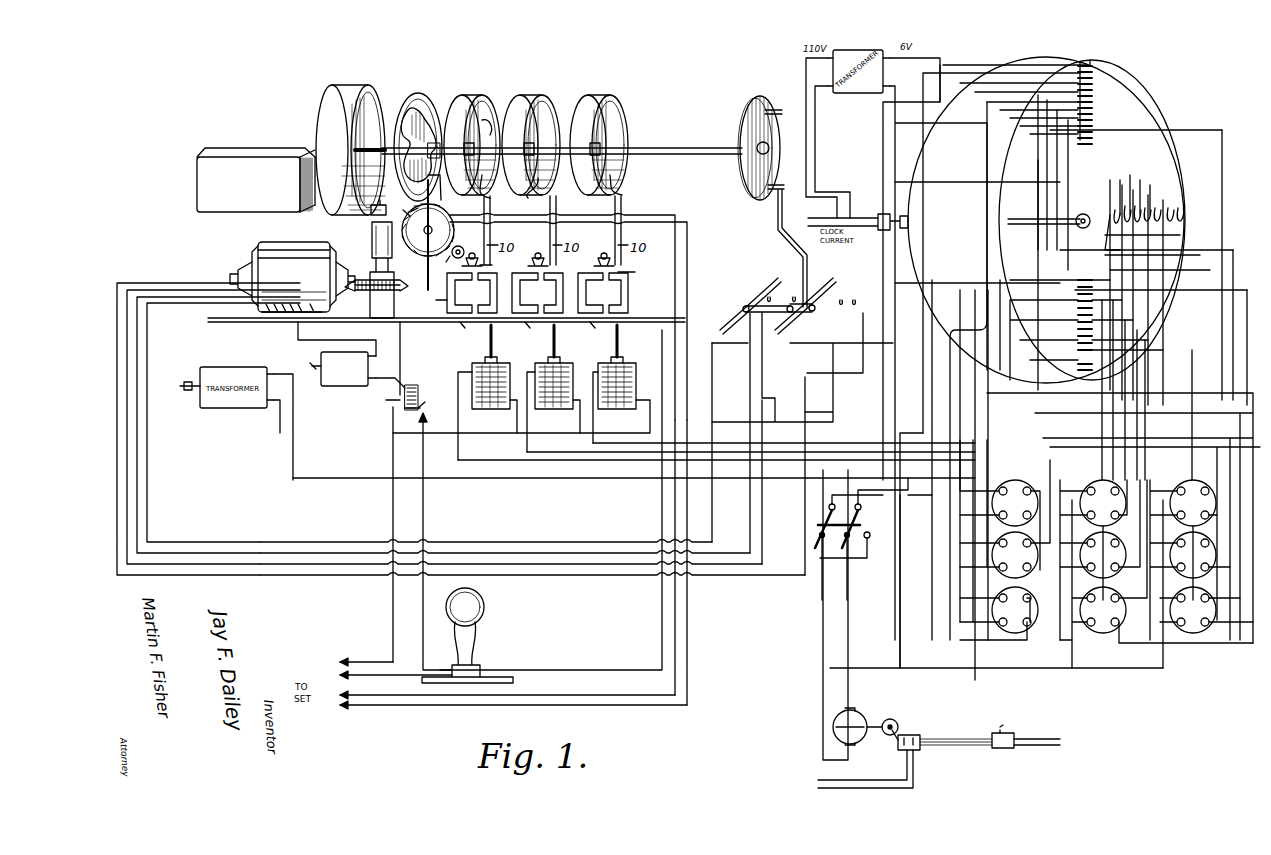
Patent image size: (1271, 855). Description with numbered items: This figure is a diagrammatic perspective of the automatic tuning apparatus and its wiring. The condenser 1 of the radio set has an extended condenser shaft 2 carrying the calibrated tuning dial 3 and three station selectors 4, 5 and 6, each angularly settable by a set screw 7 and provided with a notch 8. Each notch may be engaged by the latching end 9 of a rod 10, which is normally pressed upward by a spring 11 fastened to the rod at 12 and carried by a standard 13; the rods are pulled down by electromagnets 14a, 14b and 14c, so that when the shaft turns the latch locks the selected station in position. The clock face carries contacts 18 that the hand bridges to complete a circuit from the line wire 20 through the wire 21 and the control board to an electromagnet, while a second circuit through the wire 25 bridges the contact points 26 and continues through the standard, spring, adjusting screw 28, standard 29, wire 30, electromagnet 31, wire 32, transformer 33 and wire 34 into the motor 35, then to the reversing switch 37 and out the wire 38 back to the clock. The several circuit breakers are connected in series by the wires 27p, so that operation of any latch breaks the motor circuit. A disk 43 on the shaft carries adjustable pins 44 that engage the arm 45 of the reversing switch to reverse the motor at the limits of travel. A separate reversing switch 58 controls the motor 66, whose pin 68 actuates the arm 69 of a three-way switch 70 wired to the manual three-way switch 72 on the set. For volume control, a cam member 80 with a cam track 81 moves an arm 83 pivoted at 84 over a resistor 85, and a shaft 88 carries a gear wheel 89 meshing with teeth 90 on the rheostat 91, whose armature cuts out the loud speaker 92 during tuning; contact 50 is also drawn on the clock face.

The condenser 1 is at (196, 182).
The condenser shaft 2 is at (378, 125).
The calibrated tuning dial 3 is at (320, 100).
The station selector 4 is at (462, 104).
The station selector 5 is at (535, 102).
The station selector 6 is at (600, 102).
The set screw 7 is at (631, 128).
The notch 8 is at (562, 146).
The latching end 9 is at (568, 305).
The rod 10 is at (1122, 72).
The spring 11 is at (622, 280).
The fastening point 12 is at (1026, 224).
The standard 13 is at (537, 283).
The electromagnet 14a is at (487, 392).
The electromagnet 14b is at (553, 388).
The electromagnet 14c is at (621, 384).
The contacts 18 is at (1093, 92).
The line wire 20 is at (1130, 95).
The wire 21 is at (1001, 253).
The wire 25 is at (1036, 148).
The contact points 26 is at (1022, 490).
The wires 27p is at (532, 336).
The adjusting screw 28 is at (473, 262).
The standard 29 is at (432, 295).
The wire 30 is at (436, 337).
The electromagnet 31 is at (384, 396).
The wire 32 is at (391, 372).
The transformer 33 is at (340, 362).
The wire 34 is at (349, 339).
The motor 35 is at (308, 240).
The reversing switch 37 is at (748, 304).
The wire 38 is at (978, 124).
The disk 43 is at (745, 120).
The adjustable pins 44 is at (785, 138).
The arm 45 is at (778, 228).
The contact 50 is at (1095, 62).
The reversing switch 58 is at (864, 522).
The motor 66 is at (858, 715).
The pin 68 is at (886, 733).
The arm 69 is at (894, 742).
The three-way switch 70 is at (918, 752).
The manual three-way switch 72 is at (1003, 748).
The cam member 80 is at (415, 100).
The cam track 81 is at (432, 118).
The arm 83 is at (440, 190).
The pivot 84 is at (440, 225).
The resistor 85 is at (410, 210).
The shaft 88 is at (460, 247).
The gear wheel 89 is at (440, 261).
The teeth 90 is at (386, 275).
The rheostat 91 is at (419, 308).
The loud speaker 92 is at (472, 641).